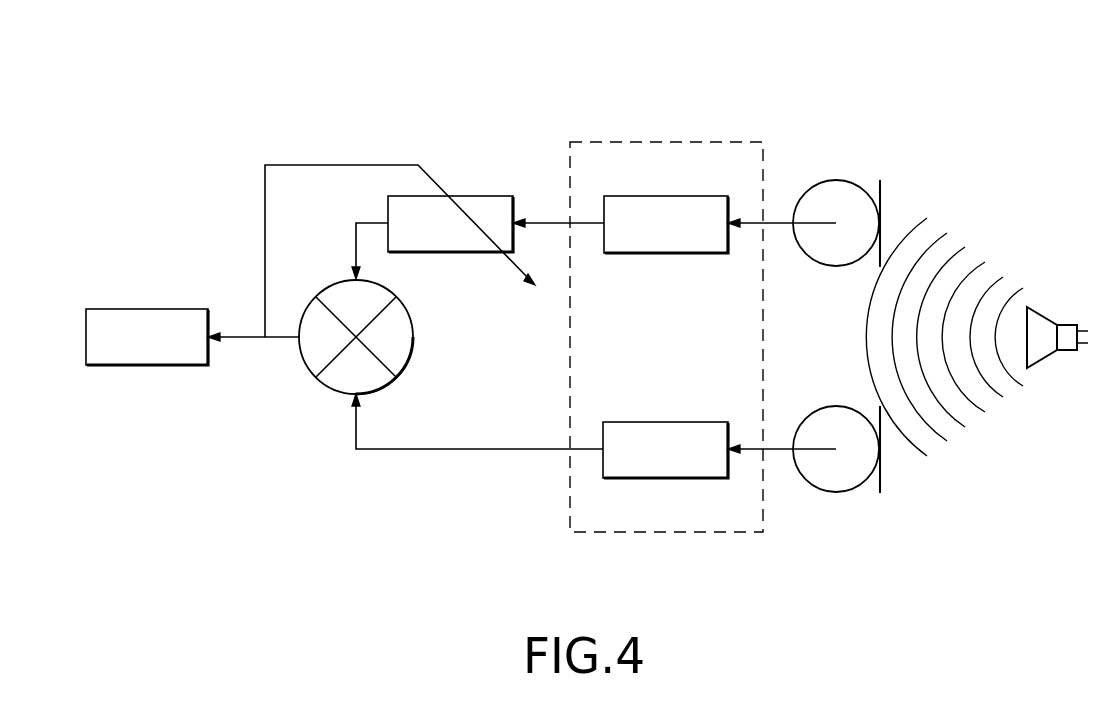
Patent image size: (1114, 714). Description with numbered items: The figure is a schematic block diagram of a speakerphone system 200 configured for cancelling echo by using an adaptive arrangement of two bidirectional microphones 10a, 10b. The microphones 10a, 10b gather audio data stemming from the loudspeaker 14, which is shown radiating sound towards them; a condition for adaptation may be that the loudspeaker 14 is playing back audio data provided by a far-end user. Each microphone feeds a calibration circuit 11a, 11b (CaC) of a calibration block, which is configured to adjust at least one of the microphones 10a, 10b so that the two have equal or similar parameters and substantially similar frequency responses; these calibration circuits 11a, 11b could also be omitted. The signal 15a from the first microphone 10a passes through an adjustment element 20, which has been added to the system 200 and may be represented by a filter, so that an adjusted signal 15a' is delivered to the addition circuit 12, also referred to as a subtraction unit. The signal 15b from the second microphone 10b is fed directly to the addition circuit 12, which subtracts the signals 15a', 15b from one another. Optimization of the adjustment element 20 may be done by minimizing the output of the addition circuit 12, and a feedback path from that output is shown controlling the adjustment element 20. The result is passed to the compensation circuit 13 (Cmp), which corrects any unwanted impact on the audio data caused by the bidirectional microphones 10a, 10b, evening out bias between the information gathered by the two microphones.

The speakerphone system 200 is at (452, 134).
The compensation circuit 13 is at (136, 309).
The addition circuit 12 is at (312, 375).
The adjustment element 20 is at (460, 253).
The signal 15a is at (558, 175).
The adjusted signal 15a' is at (339, 246).
The signal 15b is at (451, 449).
The calibration circuit 11a is at (656, 196).
The calibration circuit 11b is at (656, 422).
The microphone 10a is at (830, 180).
The microphone 10b is at (817, 407).
The loudspeaker 14 is at (1052, 320).